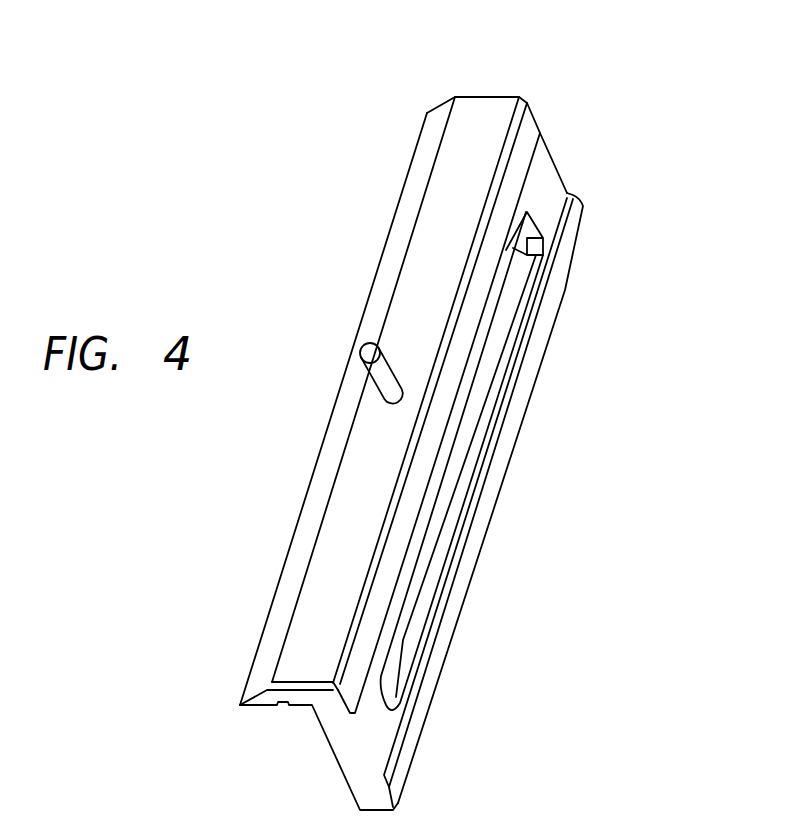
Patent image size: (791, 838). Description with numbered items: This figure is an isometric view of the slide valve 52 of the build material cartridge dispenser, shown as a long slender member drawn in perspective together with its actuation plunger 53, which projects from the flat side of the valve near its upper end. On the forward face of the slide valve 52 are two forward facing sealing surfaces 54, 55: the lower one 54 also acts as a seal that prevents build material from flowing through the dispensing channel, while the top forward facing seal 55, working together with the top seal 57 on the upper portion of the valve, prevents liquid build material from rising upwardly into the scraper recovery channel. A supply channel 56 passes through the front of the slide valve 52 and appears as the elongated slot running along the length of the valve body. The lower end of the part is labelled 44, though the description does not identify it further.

The slide member 44 is at (215, 836).
The slide valve 52 is at (548, 182).
The actuation plunger 53 is at (362, 350).
The lower forward facing sealing surface 54 is at (577, 215).
The top forward facing seal 55 is at (528, 128).
The supply channel 56 is at (397, 632).
The top seal 57 is at (483, 117).